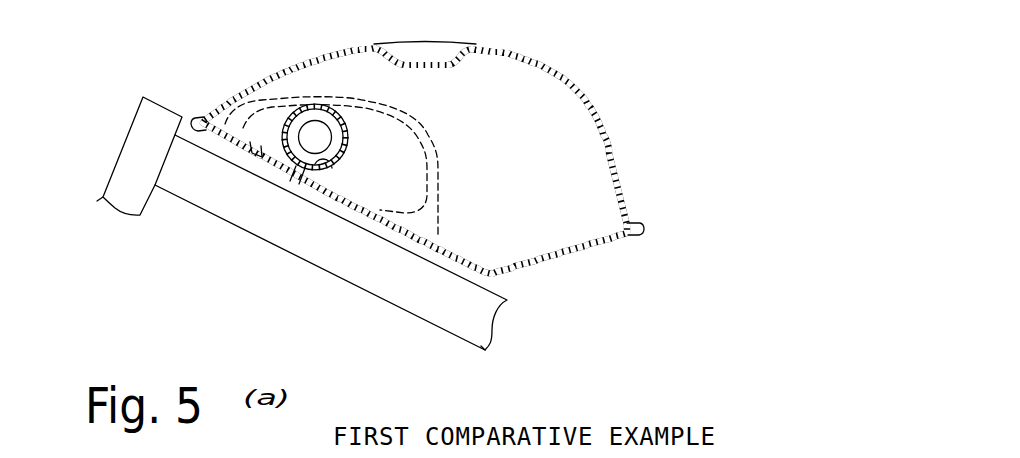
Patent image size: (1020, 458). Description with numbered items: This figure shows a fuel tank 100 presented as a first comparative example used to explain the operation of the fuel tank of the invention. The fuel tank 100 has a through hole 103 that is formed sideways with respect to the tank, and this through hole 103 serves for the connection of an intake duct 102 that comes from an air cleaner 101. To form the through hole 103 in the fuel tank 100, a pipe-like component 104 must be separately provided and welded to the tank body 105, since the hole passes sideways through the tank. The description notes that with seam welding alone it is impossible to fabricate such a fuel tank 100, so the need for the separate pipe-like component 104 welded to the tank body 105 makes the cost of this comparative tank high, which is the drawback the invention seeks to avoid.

The fuel tank 100 is at (432, 180).
The air cleaner 101 is at (242, 153).
The intake duct 102 is at (290, 152).
The through hole 103 is at (307, 165).
The pipe-like component 104 is at (357, 147).
The tank body 105 is at (612, 143).